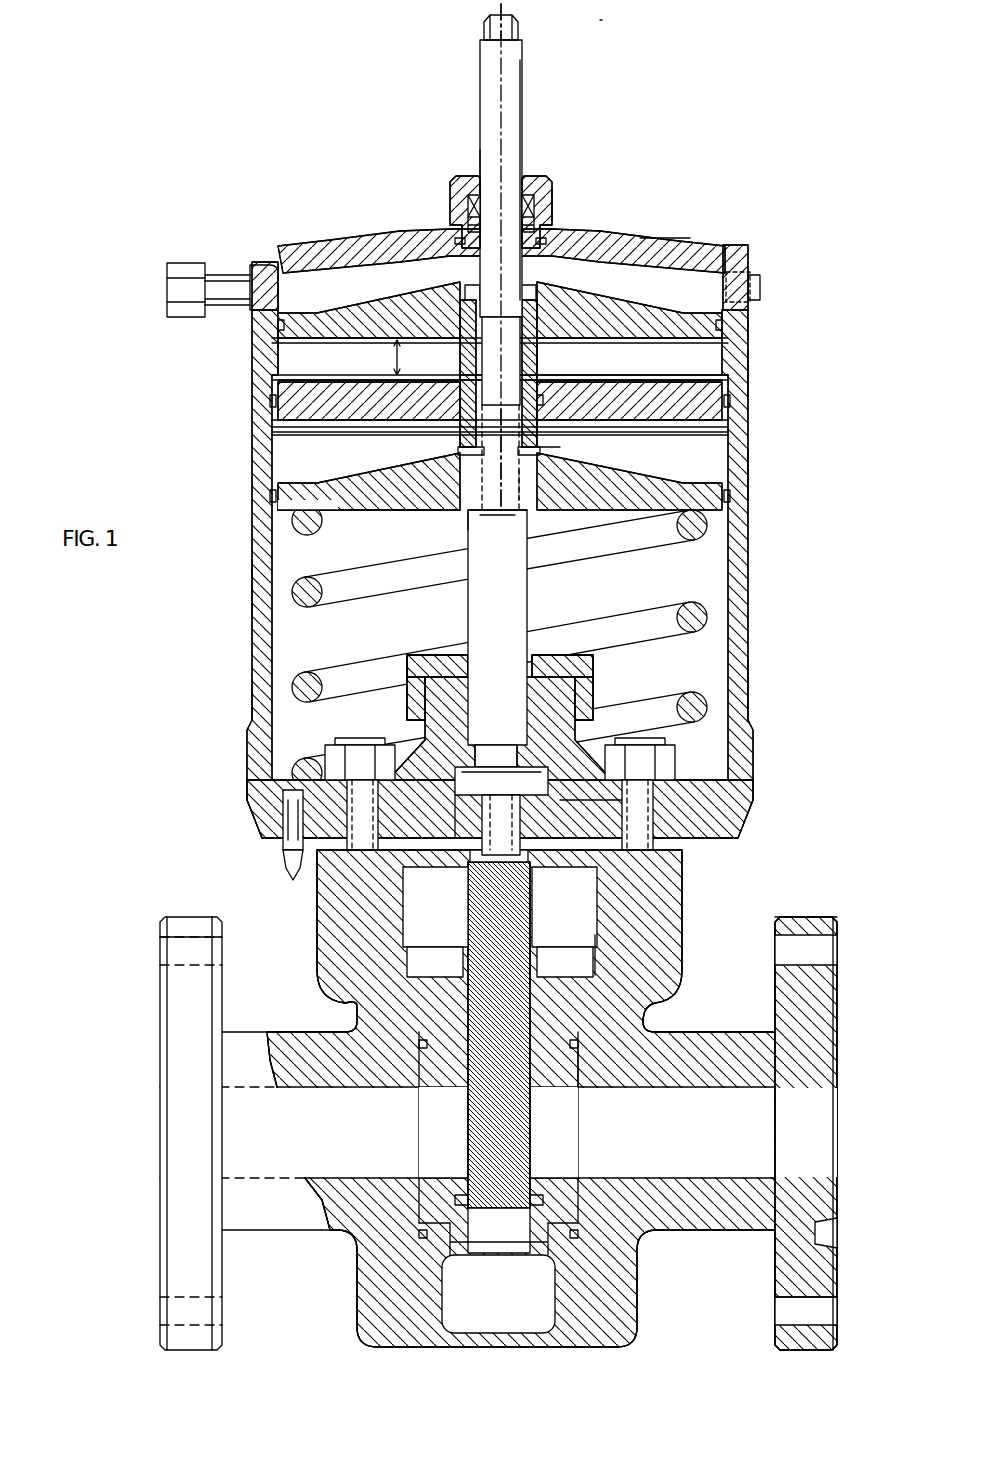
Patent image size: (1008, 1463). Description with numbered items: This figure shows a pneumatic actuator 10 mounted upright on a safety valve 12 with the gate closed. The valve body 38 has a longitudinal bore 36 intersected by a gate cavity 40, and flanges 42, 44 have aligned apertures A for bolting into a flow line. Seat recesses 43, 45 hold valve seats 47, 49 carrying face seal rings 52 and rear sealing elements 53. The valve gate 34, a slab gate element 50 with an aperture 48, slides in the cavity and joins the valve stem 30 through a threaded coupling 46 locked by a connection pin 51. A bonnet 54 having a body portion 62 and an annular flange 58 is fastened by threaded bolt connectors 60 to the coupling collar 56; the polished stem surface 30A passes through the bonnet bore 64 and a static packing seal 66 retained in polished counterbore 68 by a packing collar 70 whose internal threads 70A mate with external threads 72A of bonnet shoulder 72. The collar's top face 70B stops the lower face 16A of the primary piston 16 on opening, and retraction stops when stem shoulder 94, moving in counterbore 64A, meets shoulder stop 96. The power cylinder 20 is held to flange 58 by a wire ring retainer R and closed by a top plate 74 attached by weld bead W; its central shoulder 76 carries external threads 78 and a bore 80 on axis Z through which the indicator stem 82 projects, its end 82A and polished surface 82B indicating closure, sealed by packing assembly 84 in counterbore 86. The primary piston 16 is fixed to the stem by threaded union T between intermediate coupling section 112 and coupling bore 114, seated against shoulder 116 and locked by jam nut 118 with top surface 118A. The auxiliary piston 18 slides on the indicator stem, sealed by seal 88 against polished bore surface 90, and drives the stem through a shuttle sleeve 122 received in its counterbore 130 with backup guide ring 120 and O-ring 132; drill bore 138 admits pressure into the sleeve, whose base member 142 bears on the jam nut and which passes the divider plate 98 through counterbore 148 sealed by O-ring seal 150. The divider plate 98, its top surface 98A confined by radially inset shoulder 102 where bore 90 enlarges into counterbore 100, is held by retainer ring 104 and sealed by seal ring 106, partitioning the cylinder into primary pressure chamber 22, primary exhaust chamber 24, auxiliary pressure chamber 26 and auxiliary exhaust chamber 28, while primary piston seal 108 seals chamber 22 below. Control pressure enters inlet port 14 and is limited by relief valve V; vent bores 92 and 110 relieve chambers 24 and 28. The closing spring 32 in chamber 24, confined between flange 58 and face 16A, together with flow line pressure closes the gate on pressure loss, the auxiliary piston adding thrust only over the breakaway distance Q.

The pneumatic actuator 10 is at (698, 96).
The safety valve 12 is at (818, 895).
The inlet port 14 is at (760, 288).
The primary piston 16 is at (640, 494).
The lower face of primary piston 16A is at (370, 520).
The auxiliary piston 18 is at (738, 322).
The power cylinder 20 is at (748, 588).
The primary pressure chamber 22 is at (740, 472).
The primary exhaust chamber 24 is at (740, 690).
The auxiliary pressure chamber 26 is at (688, 268).
The auxiliary exhaust chamber 28 is at (748, 372).
The valve stem 30 is at (512, 584).
The polished cylindrical surface of valve stem 30A is at (528, 592).
The closing spring 32 is at (265, 695).
The valve gate 34 is at (452, 1142).
The safety valve bore 36 is at (286, 1092).
The valve body 38 is at (685, 1050).
The gate cavity 40 is at (590, 932).
The flange 42 is at (832, 988).
The seat recess 43 is at (578, 1058).
The flange 44 is at (158, 998).
The seat recess 45 is at (418, 1058).
The threaded coupling 46 is at (462, 878).
The valve seat element 47 is at (540, 1188).
The aperture 48 is at (548, 964).
The valve seat element 49 is at (440, 1188).
The gate element 50 is at (512, 1124).
The connection pin 51 is at (532, 900).
The face seal ring 52 is at (466, 1096).
The rear sealing element 53 is at (428, 1030).
The bonnet 54 is at (580, 820).
The coupling collar 56 is at (318, 972).
The bonnet flange 58 is at (708, 840).
The threaded bolt connectors 60 is at (362, 903).
The bonnet body 62 is at (560, 745).
The bonnet bore 64 is at (465, 758).
The counterbore 64A is at (455, 812).
The packing seal 66 is at (462, 655).
The polished counterbore 68 is at (578, 688).
The packing collar 70 is at (404, 666).
The internal threads 70A is at (410, 702).
The top annular face of packing collar 70B is at (468, 656).
The bonnet shoulder 72 is at (550, 675).
The external threads 72A is at (592, 708).
The top plate 74 is at (316, 246).
The central shoulder 76 is at (537, 184).
The external threads 78 is at (552, 200).
The top plate bore 80 is at (478, 178).
The indicator stem 82 is at (470, 92).
The external end of indicator stem 82A is at (516, 18).
The polished external surface of indicator stem 82B is at (518, 108).
The packing assembly 84 is at (465, 204).
The polished counterbore 86 is at (534, 210).
The auxiliary piston seal 88 is at (278, 328).
The polished internal bore surface 90 is at (272, 364).
The vent bore 92 is at (282, 848).
The valve stem shoulder 94 is at (478, 764).
The shoulder stop 96 is at (501, 781).
The divider plate 98 is at (728, 428).
The top surface of divider plate 98A is at (700, 395).
The polished counterbore 100 is at (272, 588).
The radially inset shoulder 102 is at (300, 352).
The retainer ring 104 is at (290, 436).
The seal ring 106 is at (270, 406).
The primary piston seal 108 is at (270, 498).
The vent bore 110 is at (272, 380).
The intermediate coupling section 112 is at (516, 490).
The coupling bore 114 is at (466, 518).
The radially inset shoulder portion 116 is at (497, 527).
The jam nut 118 is at (480, 448).
The top planar surface of jam nut 118A is at (458, 404).
The backup guide ring 120 is at (560, 296).
The shuttle sleeve 122 is at (548, 364).
The cylindrical counterbore 130 is at (540, 360).
The O-ring 132 is at (460, 350).
The drill bore 138 is at (420, 292).
The force transmitting base member 142 is at (545, 448).
The counterbore 148 is at (545, 410).
The O-ring seal 150 is at (540, 400).
The aligned apertures A is at (160, 948).
The limited travel distance Q is at (395, 362).
The ring retainer R is at (448, 238).
The threaded union T is at (522, 492).
The relief valve V is at (178, 283).
The weld bead W is at (256, 270).
The longitudinal axis Z is at (520, 72).